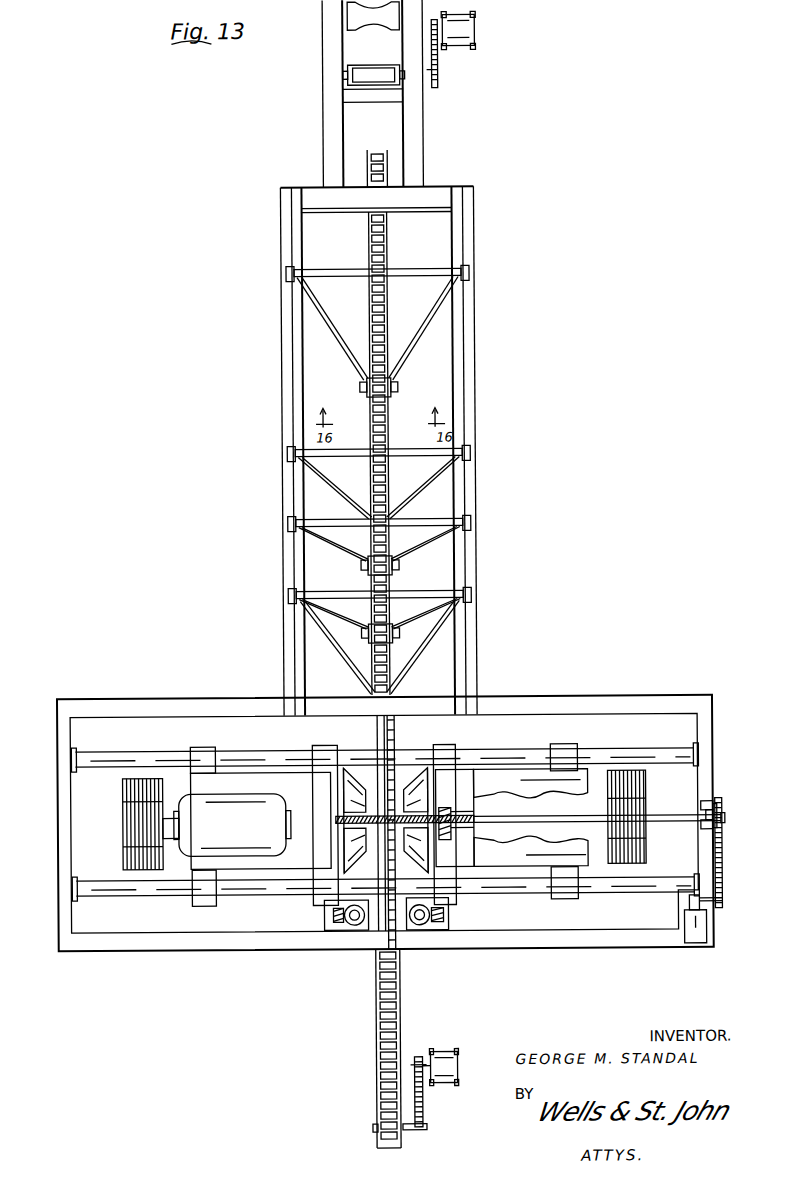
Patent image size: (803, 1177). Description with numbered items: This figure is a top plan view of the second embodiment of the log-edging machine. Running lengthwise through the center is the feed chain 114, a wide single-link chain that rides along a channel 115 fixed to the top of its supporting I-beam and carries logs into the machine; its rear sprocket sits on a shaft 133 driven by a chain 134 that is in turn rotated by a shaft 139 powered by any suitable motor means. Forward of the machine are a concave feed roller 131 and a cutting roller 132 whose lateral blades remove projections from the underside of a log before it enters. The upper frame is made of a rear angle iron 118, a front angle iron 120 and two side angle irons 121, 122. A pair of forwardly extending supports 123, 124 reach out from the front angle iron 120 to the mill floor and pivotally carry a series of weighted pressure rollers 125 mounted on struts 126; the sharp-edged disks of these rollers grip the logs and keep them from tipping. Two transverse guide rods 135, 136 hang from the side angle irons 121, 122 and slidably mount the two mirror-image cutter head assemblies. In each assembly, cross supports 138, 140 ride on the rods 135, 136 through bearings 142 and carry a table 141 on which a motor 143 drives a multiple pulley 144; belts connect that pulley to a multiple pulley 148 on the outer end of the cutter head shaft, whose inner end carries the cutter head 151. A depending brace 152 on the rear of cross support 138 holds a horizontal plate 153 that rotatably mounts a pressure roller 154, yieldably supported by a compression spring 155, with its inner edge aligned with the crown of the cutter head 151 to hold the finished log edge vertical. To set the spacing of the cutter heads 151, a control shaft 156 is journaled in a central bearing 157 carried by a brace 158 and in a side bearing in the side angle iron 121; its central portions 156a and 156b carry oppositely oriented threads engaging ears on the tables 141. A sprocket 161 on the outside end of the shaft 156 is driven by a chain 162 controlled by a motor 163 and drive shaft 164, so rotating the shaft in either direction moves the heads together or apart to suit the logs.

The feed chain 114 is at (397, 978).
The channel 115 is at (398, 1012).
The rear angle iron 118 is at (552, 948).
The front angle iron 120 is at (638, 697).
The side angle iron 121 is at (705, 772).
The side angle iron 122 is at (57, 849).
The forwardly extending support 123 is at (284, 548).
The forwardly extending support 124 is at (470, 551).
The pressure roller 125 is at (384, 392).
The strut 126 is at (341, 343).
The concave feed roller 131 is at (360, 18).
The cutting roller 132 is at (354, 77).
The shaft 133 is at (408, 1131).
The chain 134 is at (420, 1102).
The transverse guide rod 135 is at (123, 759).
The transverse guide rod 136 is at (93, 884).
The cross support 138 is at (195, 874).
The shaft 139 is at (423, 1060).
The cross support 140 is at (318, 873).
The table 141 is at (316, 800).
The bearing 142 is at (200, 896).
The motor 143 is at (244, 829).
The multiple pulley 144 is at (122, 801).
The multiple pulley 148 is at (647, 838).
The cutter head 151 is at (421, 783).
The depending brace 152 is at (327, 924).
The horizontal plate 153 is at (363, 924).
The pressure roller 154 is at (447, 920).
The compression spring 155 is at (447, 906).
The control shaft 156 is at (670, 817).
The centrally located portion of the control shaft 156a is at (455, 824).
The centrally located portion of the control shaft 156b is at (340, 819).
The central bearing 157 is at (392, 815).
The brace 158 is at (378, 733).
The sprocket 161 is at (723, 810).
The chain 162 is at (721, 857).
The motor 163 is at (705, 938).
The drive shaft 164 is at (720, 906).